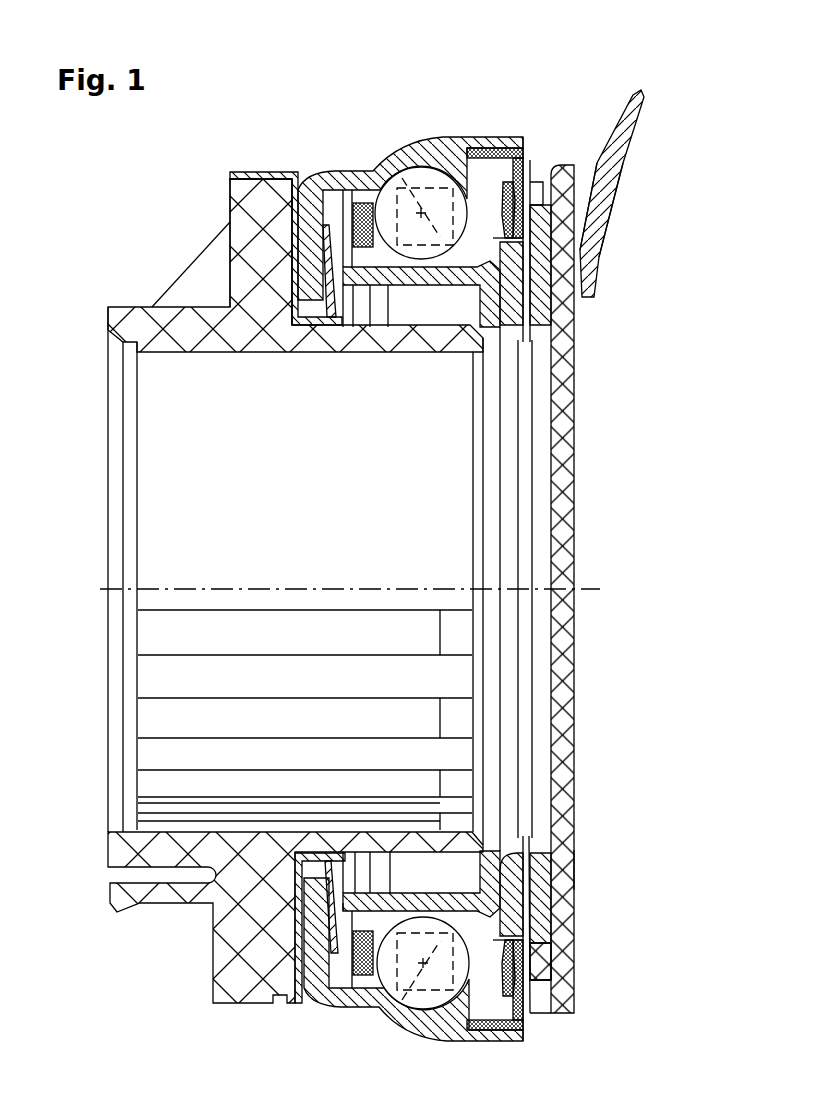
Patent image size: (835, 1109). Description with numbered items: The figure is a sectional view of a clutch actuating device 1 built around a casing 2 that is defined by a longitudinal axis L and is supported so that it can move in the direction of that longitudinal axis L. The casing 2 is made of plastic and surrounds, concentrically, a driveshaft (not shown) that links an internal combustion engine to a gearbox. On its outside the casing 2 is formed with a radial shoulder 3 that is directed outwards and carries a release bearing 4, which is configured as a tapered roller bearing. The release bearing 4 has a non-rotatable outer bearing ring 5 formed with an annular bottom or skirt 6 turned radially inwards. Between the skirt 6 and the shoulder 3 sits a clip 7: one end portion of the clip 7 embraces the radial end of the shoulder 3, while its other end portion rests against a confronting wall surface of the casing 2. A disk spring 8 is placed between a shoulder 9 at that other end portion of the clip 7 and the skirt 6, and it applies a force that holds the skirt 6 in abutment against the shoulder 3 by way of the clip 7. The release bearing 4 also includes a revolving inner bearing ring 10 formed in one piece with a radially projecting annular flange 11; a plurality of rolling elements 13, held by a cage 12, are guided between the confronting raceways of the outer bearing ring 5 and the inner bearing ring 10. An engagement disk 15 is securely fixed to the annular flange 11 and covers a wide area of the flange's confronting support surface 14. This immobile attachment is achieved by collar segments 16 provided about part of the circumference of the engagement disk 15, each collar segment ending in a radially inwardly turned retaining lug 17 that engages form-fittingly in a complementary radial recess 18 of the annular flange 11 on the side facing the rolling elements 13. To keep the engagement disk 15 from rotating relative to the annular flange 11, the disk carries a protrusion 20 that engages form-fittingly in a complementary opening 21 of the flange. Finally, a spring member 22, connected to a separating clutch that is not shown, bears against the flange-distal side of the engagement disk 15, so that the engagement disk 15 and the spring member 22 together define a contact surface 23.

The clutch actuating device 1 is at (172, 268).
The casing 2 is at (118, 320).
The radial shoulder 3 is at (238, 975).
The release bearing 4 is at (402, 140).
The outer bearing ring 5 is at (433, 143).
The skirt 6 is at (310, 190).
The clip 7 is at (277, 173).
The disk spring 8 is at (340, 190).
The shoulder of the clip 9 is at (335, 335).
The inner bearing ring 10 is at (425, 292).
The annular flange 11 is at (540, 307).
The cage 12 is at (362, 210).
The rolling elements 13 is at (445, 180).
The support surface 14 is at (575, 897).
The engagement disk 15 is at (575, 870).
The collar segments 16 is at (560, 163).
The retaining lug 17 is at (527, 313).
The radial recess 18 is at (585, 168).
The protrusion 20 is at (557, 943).
The opening 21 is at (557, 943).
The spring member 22 is at (620, 160).
The contact surface 23 is at (577, 257).
The longitudinal axis L is at (583, 587).